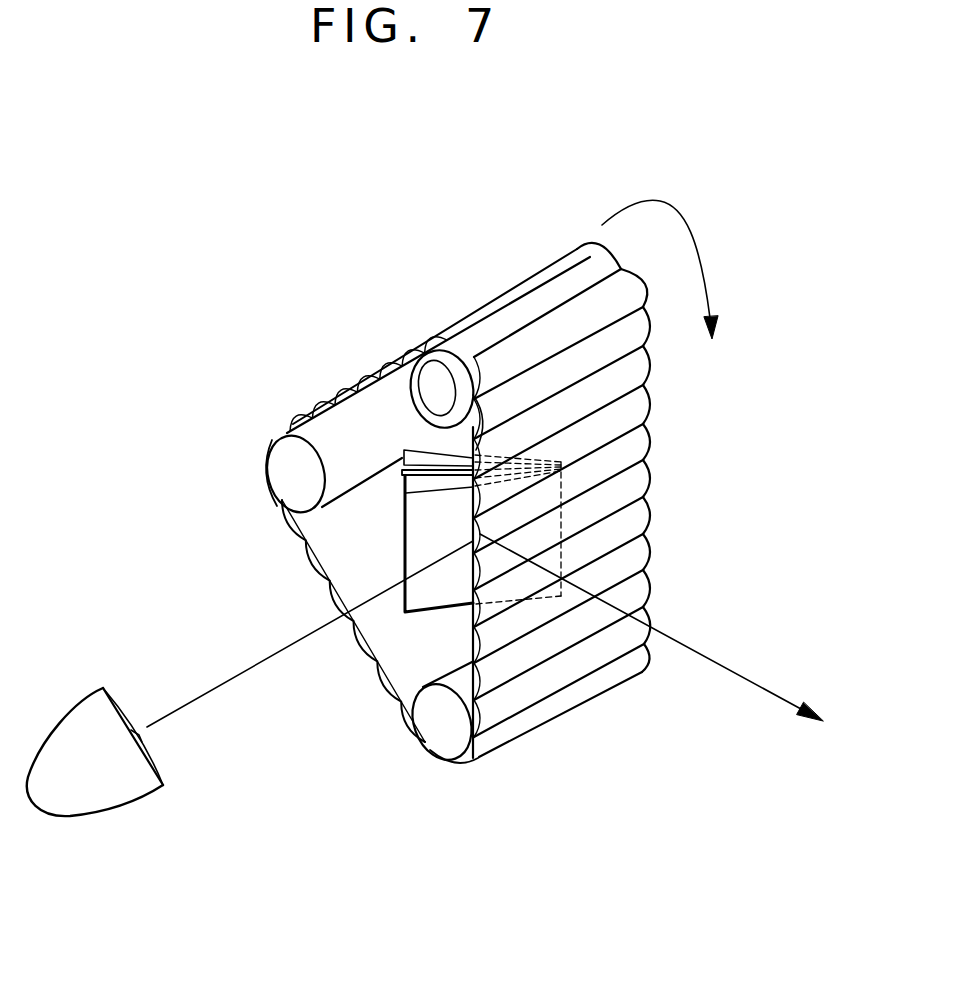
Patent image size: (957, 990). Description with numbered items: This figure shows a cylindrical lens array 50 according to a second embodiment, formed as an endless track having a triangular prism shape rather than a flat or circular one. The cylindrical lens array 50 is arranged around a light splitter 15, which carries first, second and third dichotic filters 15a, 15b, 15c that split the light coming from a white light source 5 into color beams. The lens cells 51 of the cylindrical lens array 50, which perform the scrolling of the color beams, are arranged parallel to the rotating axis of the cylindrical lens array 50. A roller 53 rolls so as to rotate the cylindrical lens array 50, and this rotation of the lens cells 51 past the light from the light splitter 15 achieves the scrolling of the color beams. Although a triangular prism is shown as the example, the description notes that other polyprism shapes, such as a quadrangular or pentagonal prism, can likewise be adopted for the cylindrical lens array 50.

The white light source 5 is at (62, 728).
The light splitter 15 is at (505, 226).
The first dichotic filter 15a is at (403, 452).
The second dichotic filter 15b is at (435, 473).
The third dichotic filter 15c is at (447, 473).
The cylindrical lens array 50 is at (297, 326).
The lens cells 51 is at (537, 652).
The roller 53 is at (440, 732).